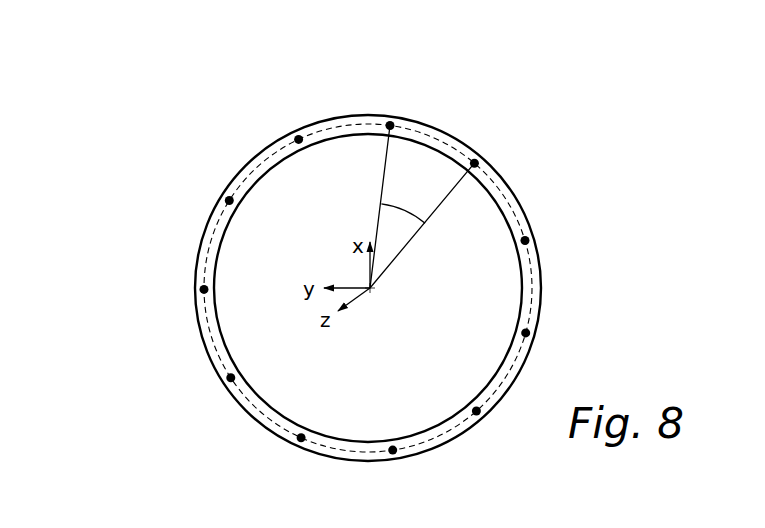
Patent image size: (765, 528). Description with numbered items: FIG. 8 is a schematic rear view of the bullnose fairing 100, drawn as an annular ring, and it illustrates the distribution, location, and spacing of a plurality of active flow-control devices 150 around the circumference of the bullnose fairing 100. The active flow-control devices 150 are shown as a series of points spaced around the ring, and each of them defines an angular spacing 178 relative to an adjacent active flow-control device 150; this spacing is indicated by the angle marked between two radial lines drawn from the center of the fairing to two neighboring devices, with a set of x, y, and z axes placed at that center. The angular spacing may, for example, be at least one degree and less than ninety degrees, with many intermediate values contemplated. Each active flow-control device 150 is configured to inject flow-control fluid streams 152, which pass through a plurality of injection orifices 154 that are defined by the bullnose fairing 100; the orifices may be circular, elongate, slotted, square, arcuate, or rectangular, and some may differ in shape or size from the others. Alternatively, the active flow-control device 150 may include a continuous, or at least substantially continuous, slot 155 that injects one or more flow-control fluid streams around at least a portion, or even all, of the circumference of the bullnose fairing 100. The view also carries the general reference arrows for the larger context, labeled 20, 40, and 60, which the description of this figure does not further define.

The system 20 is at (136, 127).
The apparatus 40 is at (107, 163).
The assembly 60 is at (89, 204).
The bullnose fairing 100 is at (195, 267).
The active flow-control devices 150 is at (390, 111).
The flow-control fluid streams 152 is at (381, 117).
The injection orifices 154 is at (478, 148).
The slot 155 is at (541, 310).
The angular spacing 178 is at (433, 216).